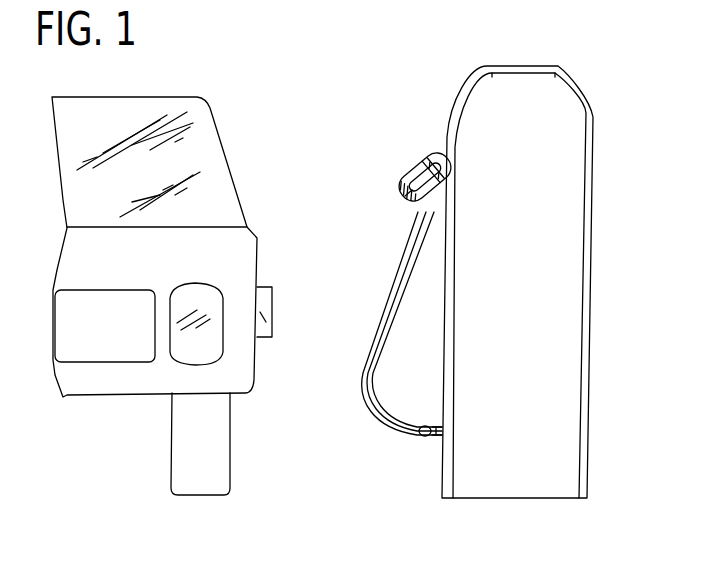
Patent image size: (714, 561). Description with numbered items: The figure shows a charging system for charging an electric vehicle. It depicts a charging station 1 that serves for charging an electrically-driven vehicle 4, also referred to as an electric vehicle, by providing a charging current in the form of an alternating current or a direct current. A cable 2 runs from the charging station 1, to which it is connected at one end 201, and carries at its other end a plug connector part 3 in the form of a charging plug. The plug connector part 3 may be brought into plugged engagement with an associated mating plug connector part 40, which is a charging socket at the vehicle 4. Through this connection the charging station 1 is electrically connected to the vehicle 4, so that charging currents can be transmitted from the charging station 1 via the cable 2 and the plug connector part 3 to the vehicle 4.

The charging station 1 is at (600, 76).
The cable 2 is at (372, 440).
The plug connector part 3 is at (419, 135).
The electrically-driven vehicle 4 is at (220, 85).
The mating plug connector part 40 is at (268, 330).
The end of the cable 201 is at (424, 451).